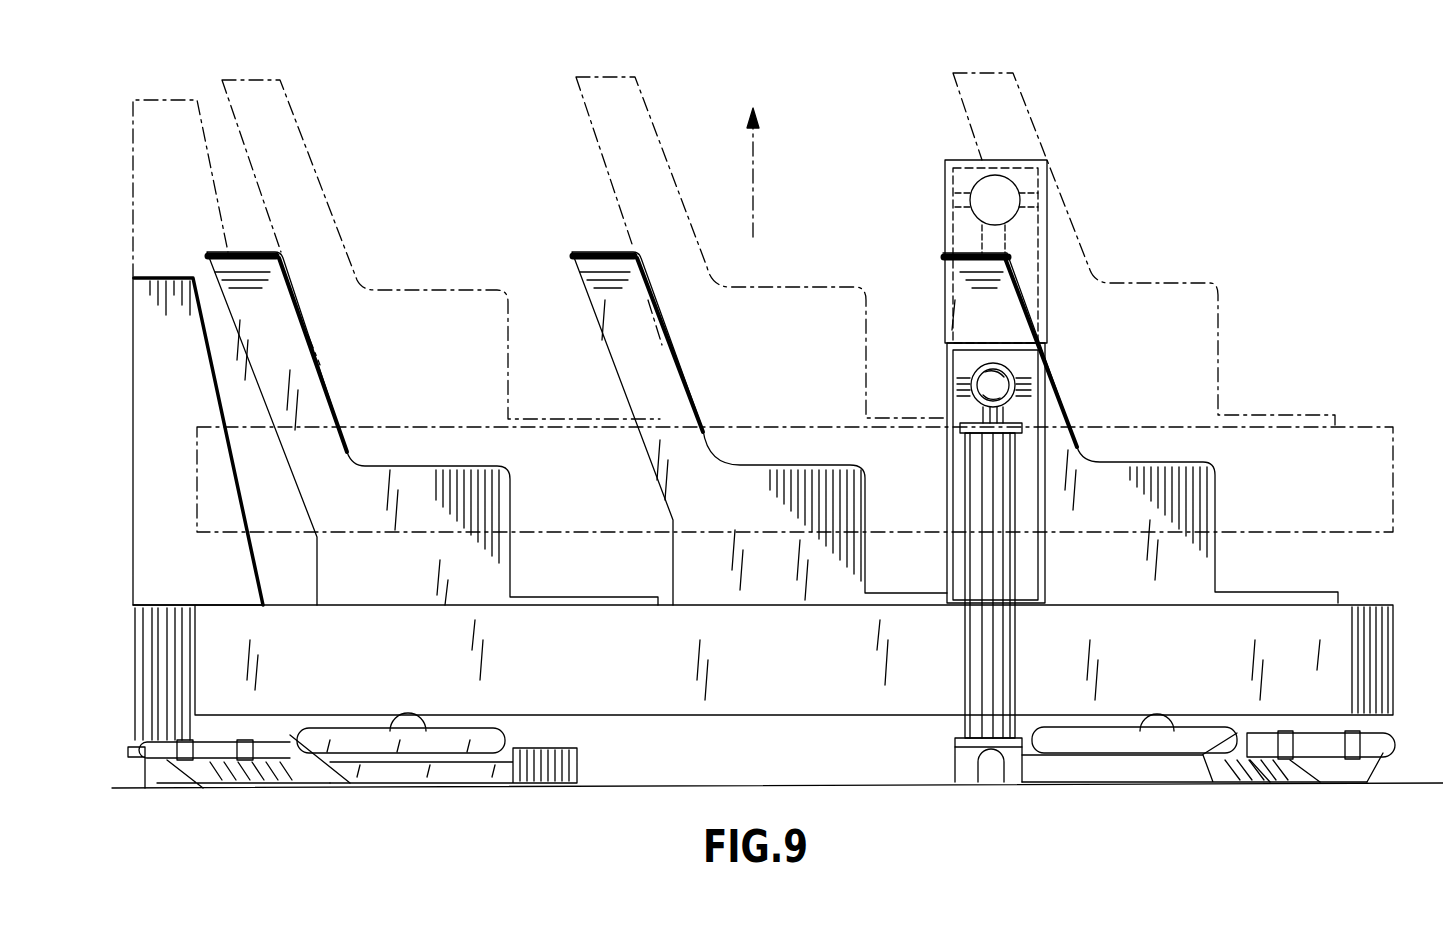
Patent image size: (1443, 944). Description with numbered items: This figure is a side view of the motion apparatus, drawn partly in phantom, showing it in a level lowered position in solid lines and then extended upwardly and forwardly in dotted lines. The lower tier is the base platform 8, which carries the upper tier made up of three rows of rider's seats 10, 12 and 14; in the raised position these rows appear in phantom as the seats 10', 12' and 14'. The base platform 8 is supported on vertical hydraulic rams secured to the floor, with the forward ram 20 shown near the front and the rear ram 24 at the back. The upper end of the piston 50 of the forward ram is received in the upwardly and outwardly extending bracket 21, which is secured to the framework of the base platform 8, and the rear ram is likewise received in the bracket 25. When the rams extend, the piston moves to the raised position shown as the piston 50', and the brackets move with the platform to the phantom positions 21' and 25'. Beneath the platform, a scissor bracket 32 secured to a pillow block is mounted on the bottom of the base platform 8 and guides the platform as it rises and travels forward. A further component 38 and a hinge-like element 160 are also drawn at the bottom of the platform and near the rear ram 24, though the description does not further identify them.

The base platform 8 is at (588, 672).
The rider's seats 10 is at (1125, 413).
The rider's seats (extended position) 10' is at (1144, 235).
The rider's seats 12 is at (759, 412).
The rider's seats (extended position) 12' is at (760, 233).
The rider's seats 14 is at (432, 412).
The rider's seats (extended position) 14' is at (441, 234).
The vertical hydraulic ram 20 is at (982, 668).
The bracket 21 is at (975, 457).
The bracket (extended position) 21' is at (987, 233).
The vertical hydraulic ram 24 is at (152, 668).
The bracket 25 is at (198, 423).
The bracket (extended position) 25' is at (169, 173).
The scissor bracket 32 is at (1375, 748).
The latch pad 38 is at (505, 742).
The piston 50 is at (965, 398).
The piston (extended position) 50' is at (974, 214).
The hinge assembly 160 is at (153, 775).